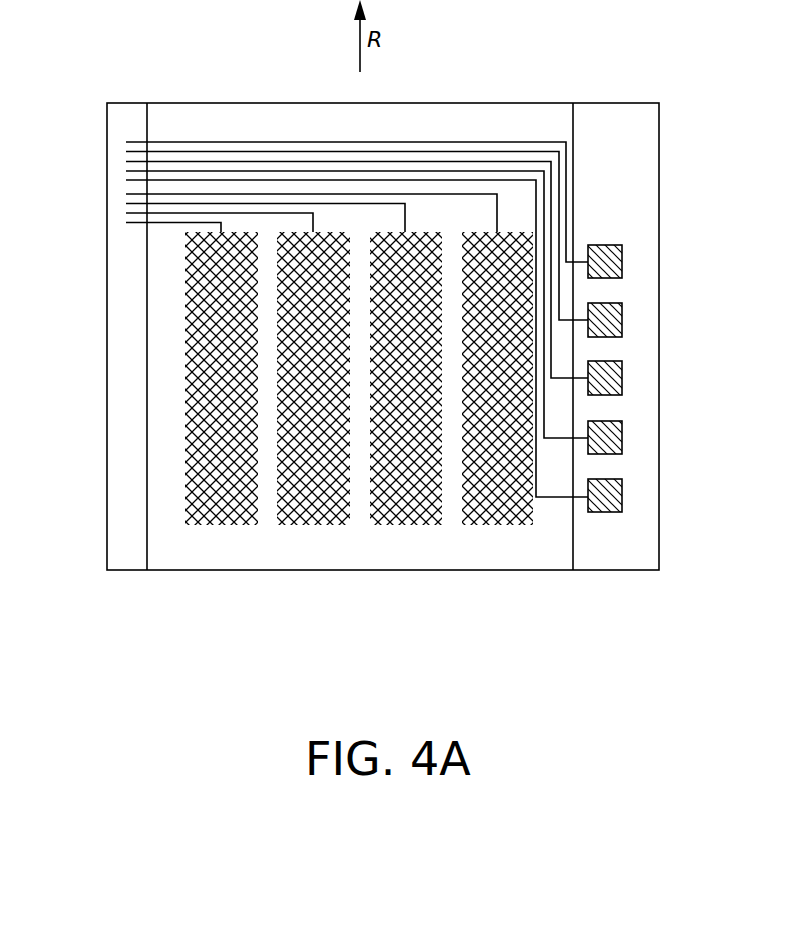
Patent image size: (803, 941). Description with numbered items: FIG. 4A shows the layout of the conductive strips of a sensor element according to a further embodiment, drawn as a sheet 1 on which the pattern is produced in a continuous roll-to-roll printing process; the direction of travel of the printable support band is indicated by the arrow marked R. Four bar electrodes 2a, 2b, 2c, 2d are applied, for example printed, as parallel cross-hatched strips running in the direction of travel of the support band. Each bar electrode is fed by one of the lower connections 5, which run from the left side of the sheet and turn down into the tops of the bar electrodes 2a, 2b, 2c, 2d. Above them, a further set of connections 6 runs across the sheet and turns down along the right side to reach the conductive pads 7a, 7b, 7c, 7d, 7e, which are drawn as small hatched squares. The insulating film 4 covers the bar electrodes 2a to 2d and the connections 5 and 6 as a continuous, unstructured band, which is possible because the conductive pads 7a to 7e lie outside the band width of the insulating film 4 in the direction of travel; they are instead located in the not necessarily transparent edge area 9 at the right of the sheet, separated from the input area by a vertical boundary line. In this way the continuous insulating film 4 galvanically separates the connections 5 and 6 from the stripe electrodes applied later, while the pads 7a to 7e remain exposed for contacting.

The substrate 1 is at (659, 148).
The bar electrode 2a is at (222, 525).
The bar electrode 2b is at (315, 525).
The bar electrode 2c is at (407, 525).
The bar electrode 2d is at (498, 525).
The insulating film 4 is at (535, 120).
The connections 5 is at (105, 208).
The connections 6 is at (105, 162).
The conductive pad 7a is at (622, 262).
The conductive pad 7b is at (622, 320).
The conductive pad 7c is at (622, 378).
The conductive pad 7d is at (622, 438).
The conductive pad 7e is at (622, 497).
The edge area 9 is at (614, 120).